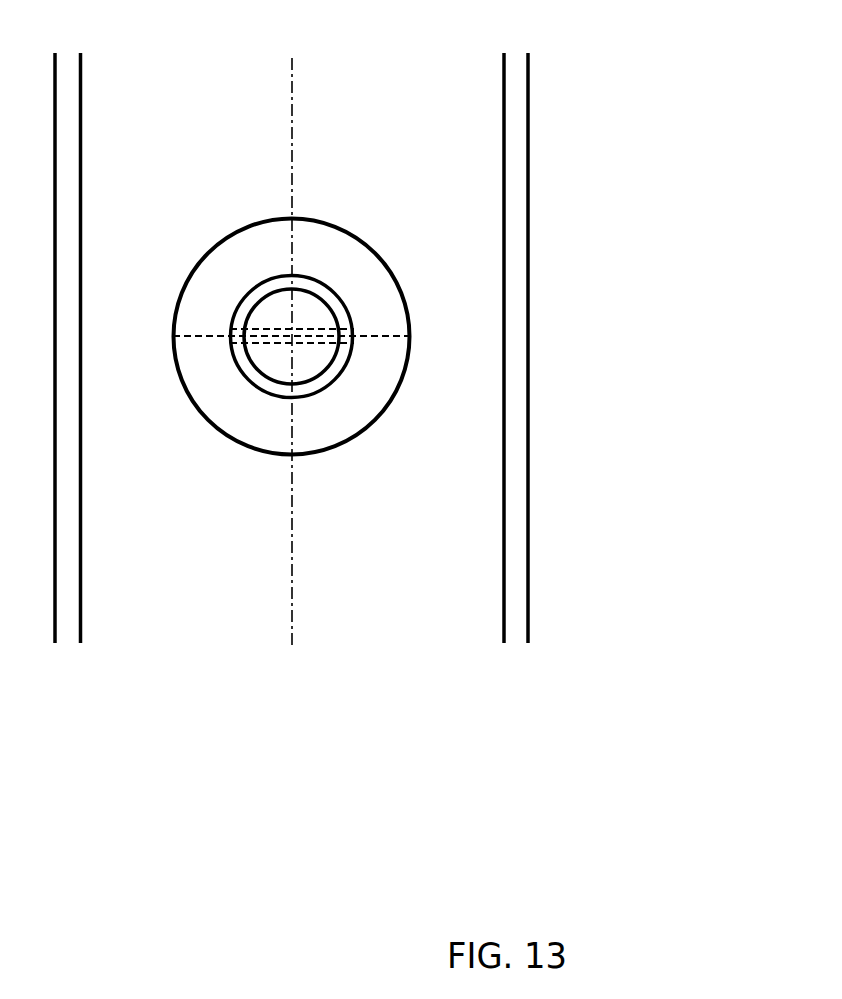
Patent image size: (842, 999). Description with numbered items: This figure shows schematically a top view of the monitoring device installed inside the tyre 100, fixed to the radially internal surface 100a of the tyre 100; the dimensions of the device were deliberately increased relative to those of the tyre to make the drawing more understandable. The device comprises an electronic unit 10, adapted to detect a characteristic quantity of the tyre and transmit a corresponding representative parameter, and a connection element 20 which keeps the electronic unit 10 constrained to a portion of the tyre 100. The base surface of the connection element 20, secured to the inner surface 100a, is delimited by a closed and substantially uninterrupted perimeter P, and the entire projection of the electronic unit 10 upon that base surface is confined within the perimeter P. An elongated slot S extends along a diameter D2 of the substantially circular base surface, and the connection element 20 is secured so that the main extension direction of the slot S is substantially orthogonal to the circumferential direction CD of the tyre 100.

The tyre 100 is at (568, 337).
The inner surface of the tyre 100a is at (445, 565).
The circumferential direction CD is at (295, 133).
The perimeter P is at (302, 273).
The connection element 20 is at (348, 222).
The electronic unit 10 is at (315, 365).
The diameter of the base surface D2 is at (378, 336).
The slot S is at (328, 328).